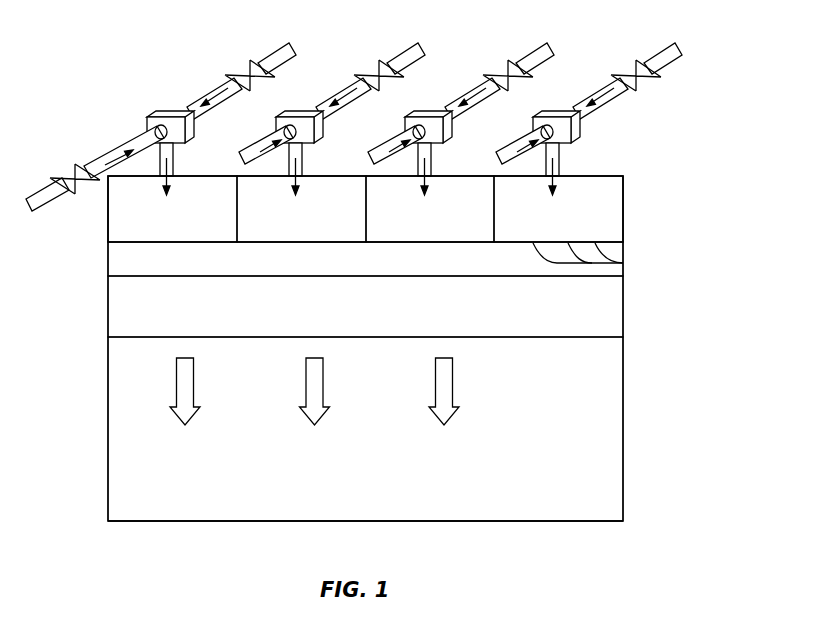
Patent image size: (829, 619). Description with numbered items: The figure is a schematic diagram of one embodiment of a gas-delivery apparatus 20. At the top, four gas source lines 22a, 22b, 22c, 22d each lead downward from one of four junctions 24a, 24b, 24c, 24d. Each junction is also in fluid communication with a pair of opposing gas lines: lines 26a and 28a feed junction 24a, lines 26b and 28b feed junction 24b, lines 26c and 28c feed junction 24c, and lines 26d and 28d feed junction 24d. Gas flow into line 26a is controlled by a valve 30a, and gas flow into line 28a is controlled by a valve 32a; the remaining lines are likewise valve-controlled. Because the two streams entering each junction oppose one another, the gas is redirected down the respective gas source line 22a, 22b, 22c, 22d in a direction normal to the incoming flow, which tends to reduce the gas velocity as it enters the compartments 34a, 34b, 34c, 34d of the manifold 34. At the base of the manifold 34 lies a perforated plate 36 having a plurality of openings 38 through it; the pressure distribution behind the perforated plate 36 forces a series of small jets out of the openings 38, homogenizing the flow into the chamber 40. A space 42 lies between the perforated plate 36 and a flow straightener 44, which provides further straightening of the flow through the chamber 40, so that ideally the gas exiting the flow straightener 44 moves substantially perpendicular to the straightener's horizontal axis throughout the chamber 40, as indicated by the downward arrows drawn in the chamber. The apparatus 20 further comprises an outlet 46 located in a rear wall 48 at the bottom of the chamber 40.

The apparatus 20 is at (705, 328).
The gas source line 22a is at (175, 160).
The gas source line 22b is at (328, 161).
The gas source line 22c is at (457, 161).
The gas source line 22d is at (586, 161).
The junction 24a is at (163, 110).
The junction 24b is at (301, 106).
The junction 24c is at (429, 107).
The junction 24d is at (558, 107).
The gas line 26a is at (118, 147).
The gas line 26b is at (261, 133).
The gas line 26c is at (391, 133).
The gas line 26d is at (520, 133).
The gas line 28a is at (210, 88).
The gas line 28b is at (370, 77).
The gas line 28c is at (499, 77).
The gas line 28d is at (627, 78).
The valve 30a is at (62, 176).
The valve 32a is at (246, 60).
The manifold 34 is at (623, 212).
The compartment 34a is at (148, 227).
The compartment 34b is at (277, 227).
The compartment 34c is at (406, 227).
The compartment 34d is at (536, 227).
The perforated plate 36 is at (623, 243).
The openings 38 is at (623, 264).
The chamber 40 is at (613, 372).
The space 42 is at (112, 258).
The flow straightener 44 is at (623, 299).
The outlet 46 is at (218, 516).
The rear wall 48 is at (526, 522).